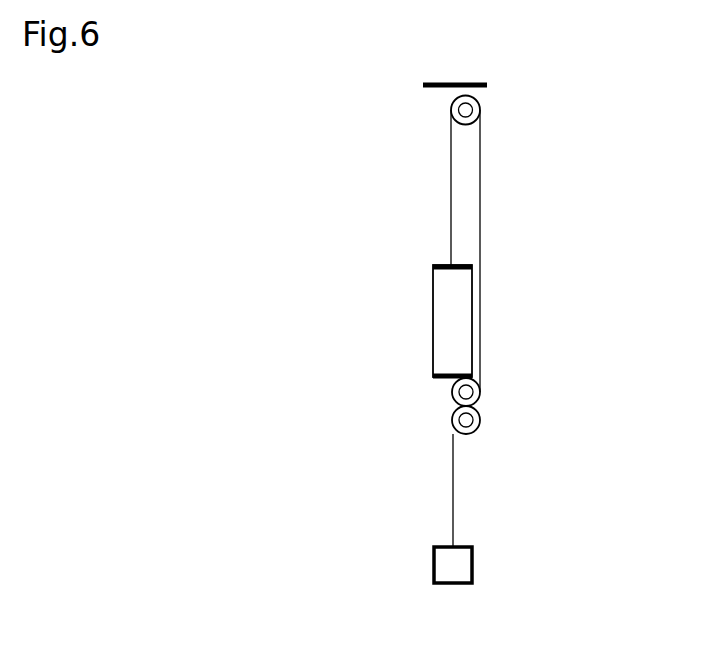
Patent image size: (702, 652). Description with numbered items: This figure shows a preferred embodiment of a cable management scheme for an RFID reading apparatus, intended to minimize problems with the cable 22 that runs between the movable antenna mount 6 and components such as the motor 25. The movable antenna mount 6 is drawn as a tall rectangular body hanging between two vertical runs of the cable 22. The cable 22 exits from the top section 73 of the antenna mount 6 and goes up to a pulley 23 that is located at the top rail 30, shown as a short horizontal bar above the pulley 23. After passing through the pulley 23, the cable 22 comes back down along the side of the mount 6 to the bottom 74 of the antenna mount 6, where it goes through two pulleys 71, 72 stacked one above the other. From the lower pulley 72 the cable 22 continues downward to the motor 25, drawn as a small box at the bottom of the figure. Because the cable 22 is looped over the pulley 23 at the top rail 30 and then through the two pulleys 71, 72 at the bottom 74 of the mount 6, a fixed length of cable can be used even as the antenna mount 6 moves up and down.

The top rail 30 is at (477, 85).
The pulley 23 is at (466, 110).
The cable 22 is at (453, 510).
The movable antenna mount 6 is at (448, 322).
The top section 73 is at (452, 265).
The bottom 74 is at (442, 377).
The pulley 71 is at (466, 392).
The pulley 72 is at (466, 420).
The motor 25 is at (457, 565).